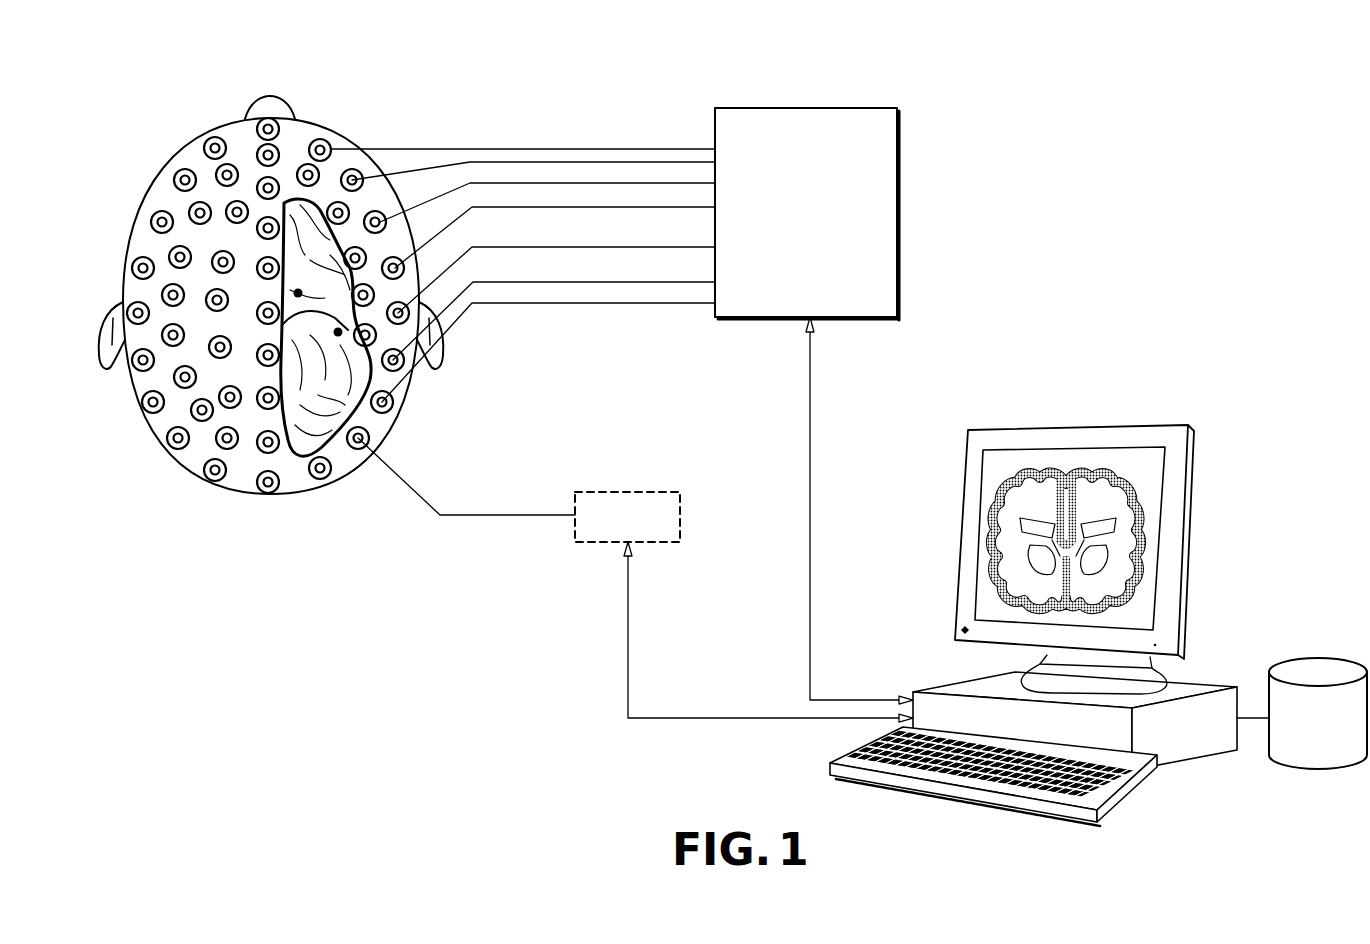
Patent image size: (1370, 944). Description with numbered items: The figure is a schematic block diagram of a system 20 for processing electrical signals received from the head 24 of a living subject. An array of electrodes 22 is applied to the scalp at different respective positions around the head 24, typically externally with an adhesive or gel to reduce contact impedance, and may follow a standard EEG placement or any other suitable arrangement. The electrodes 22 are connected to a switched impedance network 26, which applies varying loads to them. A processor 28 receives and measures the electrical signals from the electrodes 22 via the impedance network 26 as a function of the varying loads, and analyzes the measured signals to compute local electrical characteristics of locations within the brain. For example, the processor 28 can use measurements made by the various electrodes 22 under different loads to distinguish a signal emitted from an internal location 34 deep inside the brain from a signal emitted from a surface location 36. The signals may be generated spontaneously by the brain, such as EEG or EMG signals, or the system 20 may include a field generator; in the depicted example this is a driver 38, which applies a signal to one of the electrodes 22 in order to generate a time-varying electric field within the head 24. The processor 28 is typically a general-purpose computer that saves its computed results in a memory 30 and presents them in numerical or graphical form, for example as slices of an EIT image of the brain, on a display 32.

The system 20 is at (1139, 77).
The electrodes 22 is at (162, 220).
The head 24 is at (183, 467).
The switched impedance network 26 is at (835, 108).
The processor 28 is at (1191, 760).
The memory 30 is at (1320, 658).
The display 32 is at (1127, 425).
The internal location 34 is at (298, 293).
The surface location 36 is at (338, 332).
The driver 38 is at (593, 544).